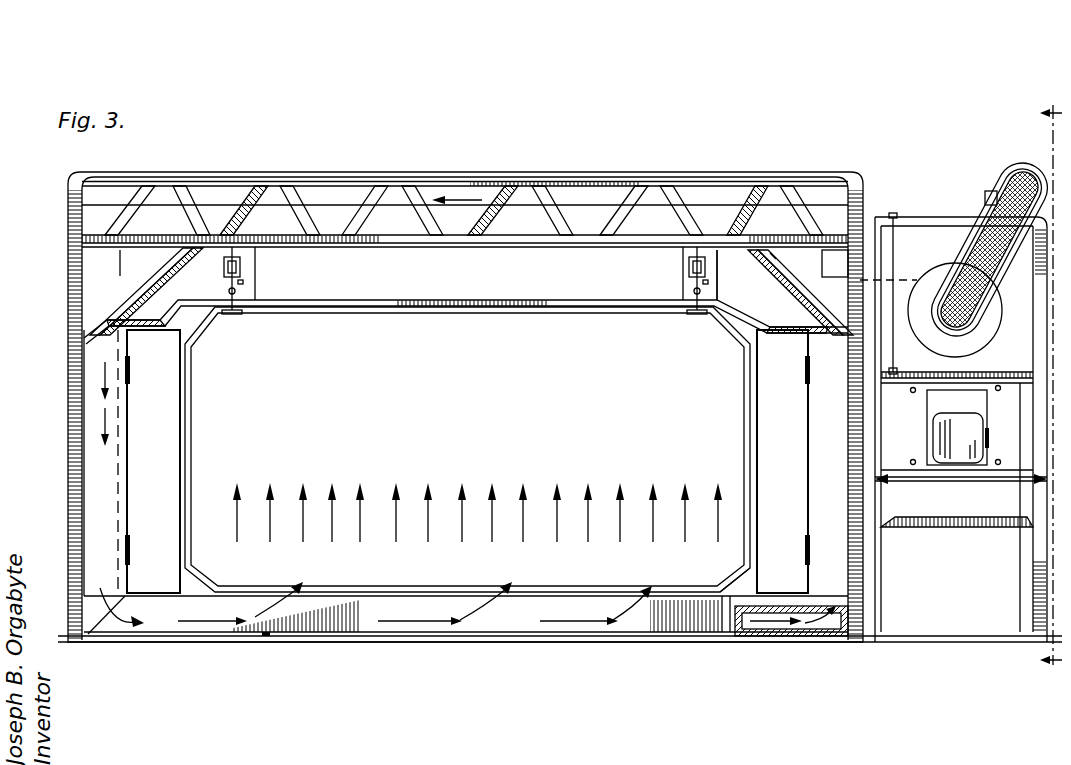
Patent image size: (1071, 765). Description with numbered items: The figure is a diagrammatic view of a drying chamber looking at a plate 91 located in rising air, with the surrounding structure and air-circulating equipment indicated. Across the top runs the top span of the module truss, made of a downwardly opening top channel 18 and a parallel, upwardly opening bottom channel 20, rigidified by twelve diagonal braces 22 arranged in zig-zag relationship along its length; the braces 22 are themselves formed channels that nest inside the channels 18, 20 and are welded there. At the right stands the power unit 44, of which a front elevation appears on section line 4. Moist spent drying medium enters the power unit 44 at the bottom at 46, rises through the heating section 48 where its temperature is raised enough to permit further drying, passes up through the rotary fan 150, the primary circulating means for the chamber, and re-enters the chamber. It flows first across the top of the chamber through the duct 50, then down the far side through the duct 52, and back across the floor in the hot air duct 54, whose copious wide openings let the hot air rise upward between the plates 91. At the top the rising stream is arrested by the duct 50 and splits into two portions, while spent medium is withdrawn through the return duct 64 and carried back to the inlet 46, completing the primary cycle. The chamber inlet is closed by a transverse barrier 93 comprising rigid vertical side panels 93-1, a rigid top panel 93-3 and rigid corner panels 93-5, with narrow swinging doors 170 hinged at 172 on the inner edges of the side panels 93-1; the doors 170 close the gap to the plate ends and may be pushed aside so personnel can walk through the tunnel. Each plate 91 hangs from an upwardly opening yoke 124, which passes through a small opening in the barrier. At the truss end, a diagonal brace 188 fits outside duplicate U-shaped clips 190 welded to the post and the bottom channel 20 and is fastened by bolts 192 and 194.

The top channel 18 is at (471, 181).
The bottom channel 20 is at (499, 241).
The diagonal braces 22 is at (652, 205).
The power unit 44 is at (960, 203).
The bottom inlet of power unit 46 is at (872, 600).
The heating section 48 is at (901, 412).
The duct 50 is at (338, 183).
The duct 52 is at (97, 370).
The hot air ducts 54 is at (327, 630).
The return duct 64 is at (782, 627).
The plates 91 is at (651, 600).
The truss panel 93 is at (165, 215).
The vertical side panels 93-1 is at (97, 450).
The top panel 93-3 is at (469, 273).
The corner panels 93-5 is at (123, 273).
The yoke 124 is at (224, 286).
The rotary fan 150 is at (923, 280).
The swinging doors 170 is at (167, 456).
The hinges 172 is at (131, 378).
The diagonal brace 188 is at (826, 308).
The U-shaped clips 190 is at (771, 251).
The bolt 192 is at (747, 275).
The bolt 194 is at (843, 340).
The section line 4- 4 is at (1033, 392).